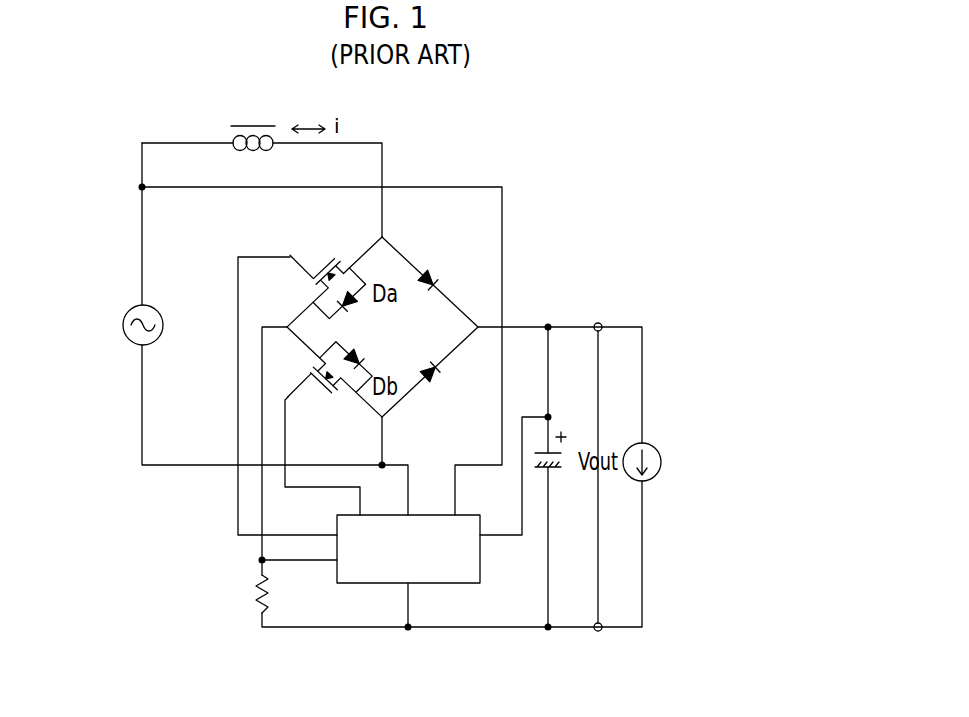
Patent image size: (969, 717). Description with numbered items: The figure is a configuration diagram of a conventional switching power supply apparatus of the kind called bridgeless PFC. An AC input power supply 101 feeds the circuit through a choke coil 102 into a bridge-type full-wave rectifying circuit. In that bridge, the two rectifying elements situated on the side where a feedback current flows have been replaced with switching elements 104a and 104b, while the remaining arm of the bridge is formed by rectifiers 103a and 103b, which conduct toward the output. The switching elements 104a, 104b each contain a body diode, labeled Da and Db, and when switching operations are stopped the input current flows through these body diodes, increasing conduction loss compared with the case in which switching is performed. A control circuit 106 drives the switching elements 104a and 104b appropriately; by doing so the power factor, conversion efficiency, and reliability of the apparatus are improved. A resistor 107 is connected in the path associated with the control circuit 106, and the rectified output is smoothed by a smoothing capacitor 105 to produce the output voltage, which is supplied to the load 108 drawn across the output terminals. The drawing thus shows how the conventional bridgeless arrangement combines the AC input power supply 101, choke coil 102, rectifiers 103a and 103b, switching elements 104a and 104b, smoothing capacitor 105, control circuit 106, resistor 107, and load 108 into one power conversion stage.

The AC input power supply 101 is at (133, 343).
The choke coil 102 is at (252, 125).
The rectifier 103a is at (437, 270).
The rectifier 103b is at (443, 364).
The switching element 104a is at (338, 252).
The switching element 104b is at (307, 372).
The smoothing capacitor 105 is at (543, 470).
The control circuit 106 is at (377, 585).
The resistor 107 is at (254, 594).
The load 108 is at (661, 462).